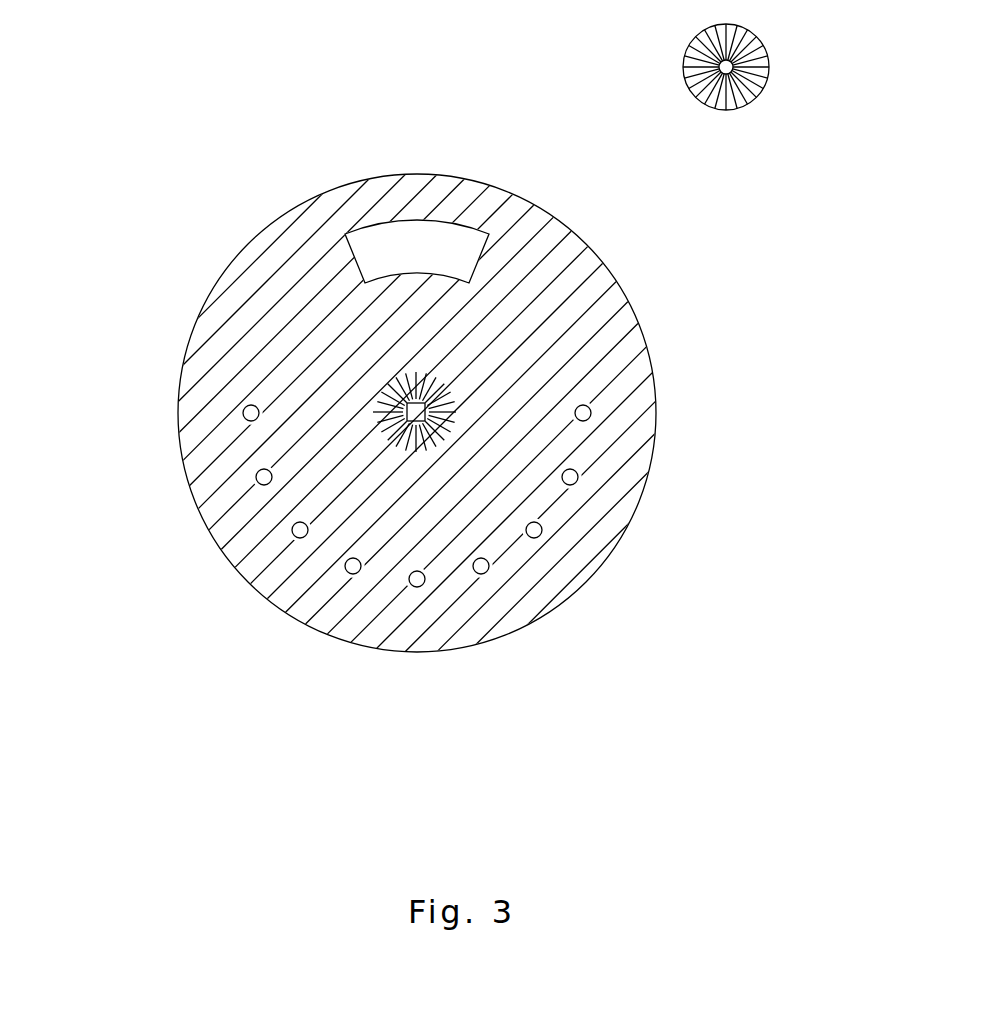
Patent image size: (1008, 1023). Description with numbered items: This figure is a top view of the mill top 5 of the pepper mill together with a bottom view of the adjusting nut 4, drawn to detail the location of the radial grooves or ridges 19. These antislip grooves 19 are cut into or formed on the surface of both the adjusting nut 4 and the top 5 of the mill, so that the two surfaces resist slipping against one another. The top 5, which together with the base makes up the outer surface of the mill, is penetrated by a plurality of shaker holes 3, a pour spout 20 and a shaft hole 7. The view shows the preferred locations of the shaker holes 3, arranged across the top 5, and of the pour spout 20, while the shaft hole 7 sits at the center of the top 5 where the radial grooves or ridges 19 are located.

The shaker holes 3 is at (319, 496).
The adjusting nut 4 is at (700, 67).
The top 5 is at (447, 413).
The shaft hole 7 is at (277, 515).
The radial grooves or ridges 19 is at (658, 265).
The pour spout 20 is at (263, 227).